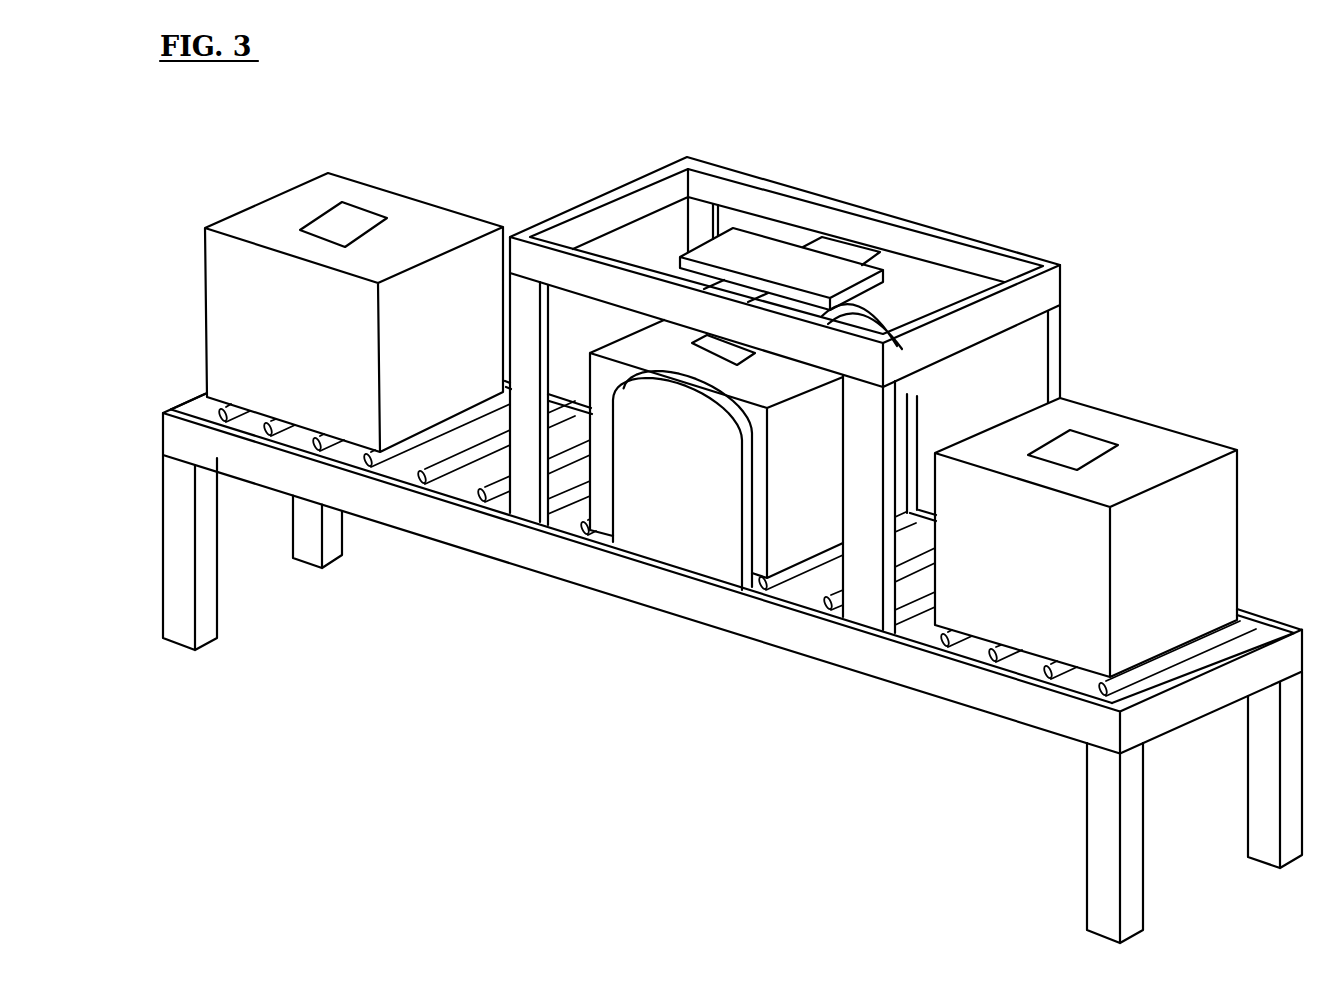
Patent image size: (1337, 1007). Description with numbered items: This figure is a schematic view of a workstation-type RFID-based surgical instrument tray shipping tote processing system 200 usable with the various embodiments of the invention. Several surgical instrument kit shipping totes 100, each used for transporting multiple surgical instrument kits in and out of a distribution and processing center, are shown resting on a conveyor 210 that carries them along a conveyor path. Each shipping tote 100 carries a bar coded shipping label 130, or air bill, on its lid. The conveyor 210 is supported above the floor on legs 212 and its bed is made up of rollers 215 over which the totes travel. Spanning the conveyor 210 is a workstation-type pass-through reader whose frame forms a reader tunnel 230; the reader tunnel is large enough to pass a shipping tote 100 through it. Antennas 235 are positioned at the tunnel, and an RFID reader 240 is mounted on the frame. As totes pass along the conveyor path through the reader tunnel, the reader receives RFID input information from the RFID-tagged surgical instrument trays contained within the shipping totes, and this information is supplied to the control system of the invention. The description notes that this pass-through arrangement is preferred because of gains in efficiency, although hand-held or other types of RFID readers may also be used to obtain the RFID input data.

The surgical instrument kit shipping tote 100 is at (278, 340).
The bar coded shipping label 130 is at (348, 207).
The package handling system 200 is at (732, 513).
The conveyor 210 is at (835, 665).
The conveyor legs 212 is at (1145, 875).
The conveyor rollers 215 is at (455, 480).
The reader frame / portal 230 is at (967, 237).
The antenna 235 is at (653, 483).
The RFID reader 240 is at (755, 268).